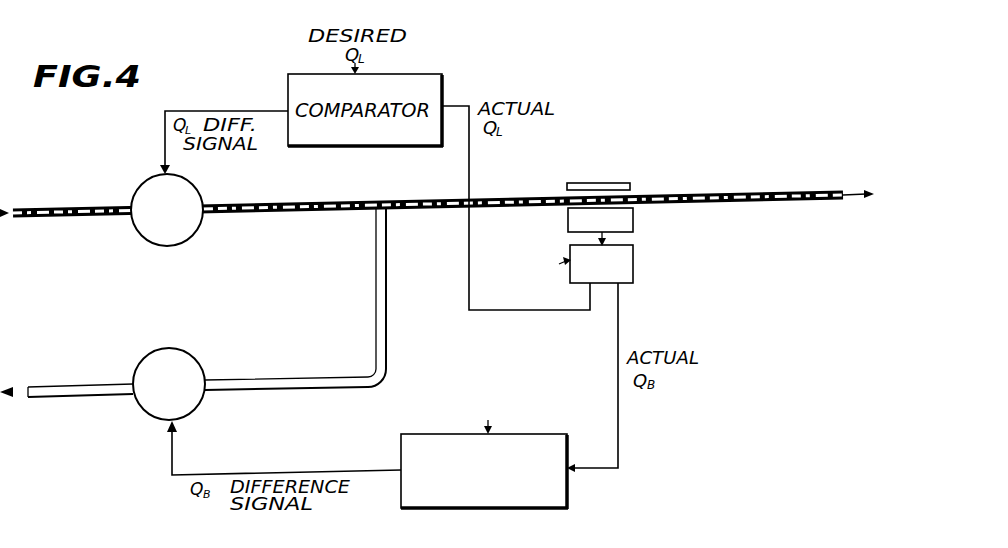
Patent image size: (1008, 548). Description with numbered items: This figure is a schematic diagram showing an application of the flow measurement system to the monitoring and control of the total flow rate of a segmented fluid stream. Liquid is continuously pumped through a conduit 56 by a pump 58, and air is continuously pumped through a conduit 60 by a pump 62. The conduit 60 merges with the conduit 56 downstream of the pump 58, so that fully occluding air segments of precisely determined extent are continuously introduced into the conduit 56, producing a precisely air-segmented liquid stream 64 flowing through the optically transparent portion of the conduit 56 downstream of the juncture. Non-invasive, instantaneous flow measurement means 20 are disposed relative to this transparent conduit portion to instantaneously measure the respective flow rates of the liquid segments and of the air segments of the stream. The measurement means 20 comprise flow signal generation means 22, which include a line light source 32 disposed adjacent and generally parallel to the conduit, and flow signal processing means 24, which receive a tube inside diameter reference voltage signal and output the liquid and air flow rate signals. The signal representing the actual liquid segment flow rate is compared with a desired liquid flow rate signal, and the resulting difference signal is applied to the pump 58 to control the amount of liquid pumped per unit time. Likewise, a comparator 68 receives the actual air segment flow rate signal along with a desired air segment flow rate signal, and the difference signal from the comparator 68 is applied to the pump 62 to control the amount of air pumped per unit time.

The non-invasive instantaneous flow measurement means 20 is at (622, 233).
The flow signal generation means 22 is at (633, 223).
The flow signal processing means 24 is at (633, 273).
The line light source 32 is at (608, 180).
The conduit 56 is at (116, 219).
The pump 58 is at (190, 236).
The conduit 60 is at (349, 388).
The pump 62 is at (198, 362).
The air-segmented liquid stream 64 is at (531, 206).
The comparator 68 is at (545, 504).